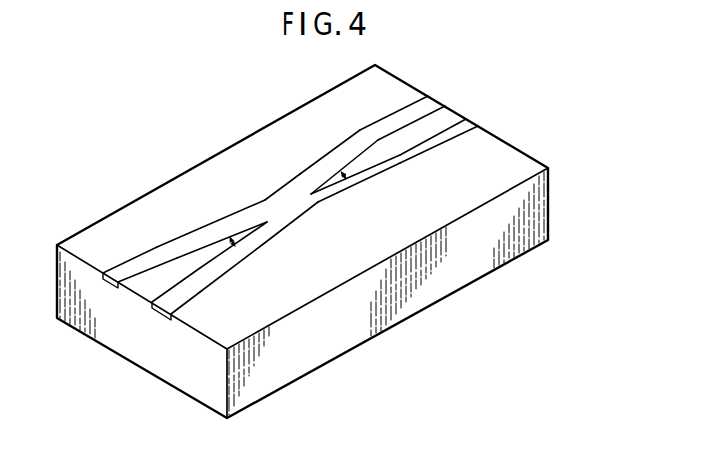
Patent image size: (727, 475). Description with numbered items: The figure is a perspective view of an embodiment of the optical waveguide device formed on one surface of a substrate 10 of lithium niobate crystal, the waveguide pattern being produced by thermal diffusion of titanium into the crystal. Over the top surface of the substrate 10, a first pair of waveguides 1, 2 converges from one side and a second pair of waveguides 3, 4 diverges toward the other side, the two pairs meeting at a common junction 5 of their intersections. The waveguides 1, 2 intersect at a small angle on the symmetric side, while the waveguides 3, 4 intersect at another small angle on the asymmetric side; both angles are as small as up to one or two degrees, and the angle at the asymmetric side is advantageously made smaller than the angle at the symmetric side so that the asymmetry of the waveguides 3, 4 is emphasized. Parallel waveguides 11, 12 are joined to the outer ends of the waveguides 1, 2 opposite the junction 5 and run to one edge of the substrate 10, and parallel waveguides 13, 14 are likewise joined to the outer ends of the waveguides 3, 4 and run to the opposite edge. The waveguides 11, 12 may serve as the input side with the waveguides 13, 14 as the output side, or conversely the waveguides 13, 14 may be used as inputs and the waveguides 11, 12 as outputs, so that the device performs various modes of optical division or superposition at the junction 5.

The substrate 10 is at (545, 208).
The parallel waveguide 11 is at (133, 260).
The parallel waveguide 12 is at (202, 292).
The waveguide 1 is at (183, 246).
The waveguide 2 is at (218, 272).
The junction 5 is at (293, 208).
The waveguide 3 is at (347, 152).
The waveguide 4 is at (390, 165).
The parallel waveguide 13 is at (407, 115).
The parallel waveguide 14 is at (453, 130).